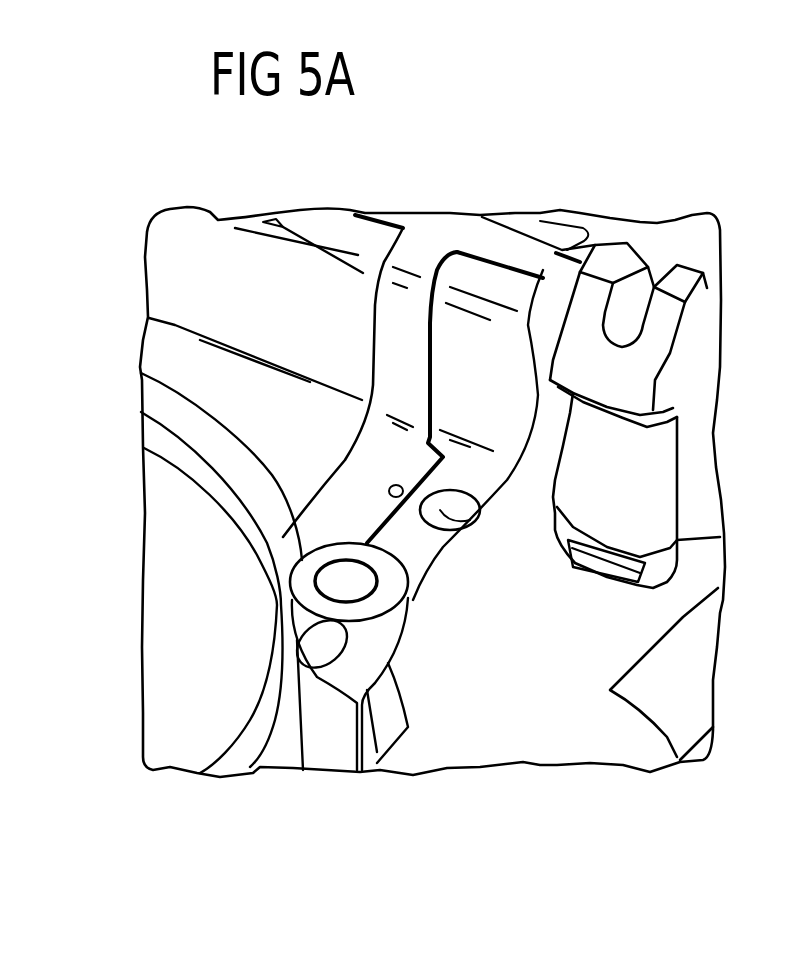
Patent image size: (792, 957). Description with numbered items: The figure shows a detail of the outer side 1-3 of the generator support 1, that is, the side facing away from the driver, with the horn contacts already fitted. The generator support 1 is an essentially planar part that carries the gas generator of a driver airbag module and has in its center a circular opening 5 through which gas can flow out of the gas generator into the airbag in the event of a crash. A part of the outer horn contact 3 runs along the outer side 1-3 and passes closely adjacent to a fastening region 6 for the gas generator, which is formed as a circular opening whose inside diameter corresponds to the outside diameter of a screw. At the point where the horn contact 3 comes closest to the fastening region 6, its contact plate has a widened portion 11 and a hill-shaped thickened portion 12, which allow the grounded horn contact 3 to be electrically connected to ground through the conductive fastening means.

The generator support 1 is at (192, 358).
The horn contact 3 is at (487, 208).
The circular opening 5 is at (175, 649).
The fastening region 6 is at (473, 522).
The widened portion 11 is at (343, 490).
The hill-shaped thickened portion 12 is at (402, 508).
The outer side of the generator support 1-3 is at (550, 683).